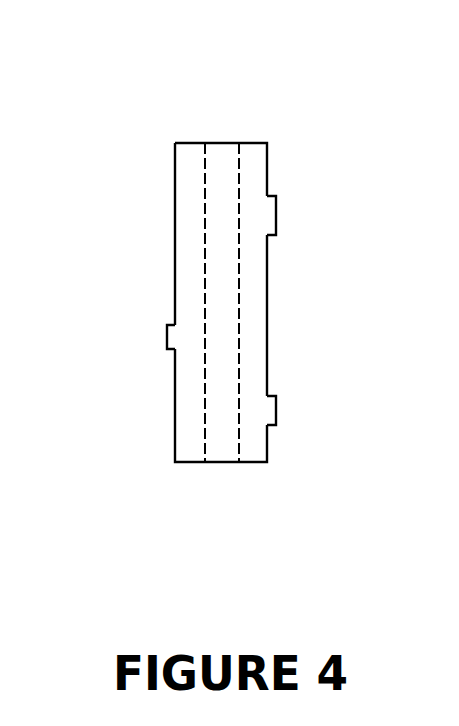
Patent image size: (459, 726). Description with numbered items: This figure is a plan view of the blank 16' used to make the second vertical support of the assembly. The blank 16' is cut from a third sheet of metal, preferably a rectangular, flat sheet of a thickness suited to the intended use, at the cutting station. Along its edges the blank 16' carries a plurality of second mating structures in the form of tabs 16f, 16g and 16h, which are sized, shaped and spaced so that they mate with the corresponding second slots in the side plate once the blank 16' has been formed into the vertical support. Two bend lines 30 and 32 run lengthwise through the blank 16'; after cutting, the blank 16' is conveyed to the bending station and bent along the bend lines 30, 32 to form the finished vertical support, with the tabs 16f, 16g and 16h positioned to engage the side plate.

The blank 16' is at (251, 254).
The tab 16f is at (270, 216).
The tab 16g is at (167, 338).
The tab 16h is at (270, 410).
The bend line 30 is at (203, 428).
The bend line 32 is at (238, 317).